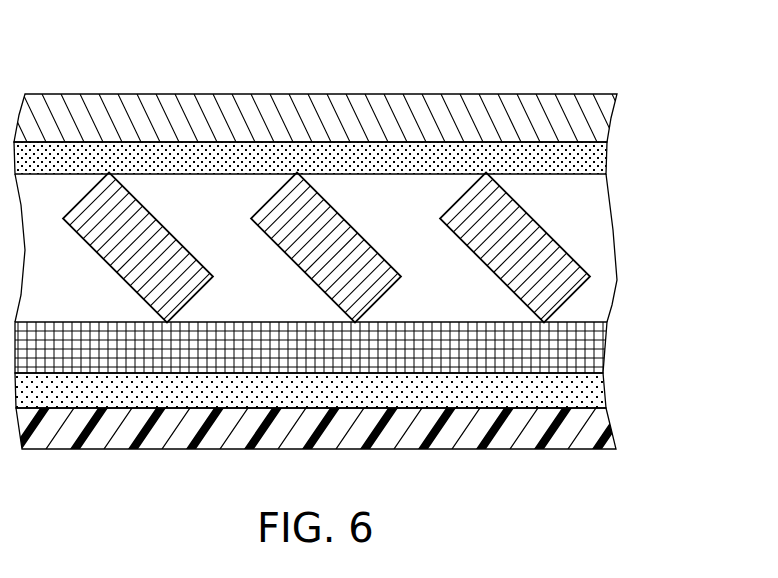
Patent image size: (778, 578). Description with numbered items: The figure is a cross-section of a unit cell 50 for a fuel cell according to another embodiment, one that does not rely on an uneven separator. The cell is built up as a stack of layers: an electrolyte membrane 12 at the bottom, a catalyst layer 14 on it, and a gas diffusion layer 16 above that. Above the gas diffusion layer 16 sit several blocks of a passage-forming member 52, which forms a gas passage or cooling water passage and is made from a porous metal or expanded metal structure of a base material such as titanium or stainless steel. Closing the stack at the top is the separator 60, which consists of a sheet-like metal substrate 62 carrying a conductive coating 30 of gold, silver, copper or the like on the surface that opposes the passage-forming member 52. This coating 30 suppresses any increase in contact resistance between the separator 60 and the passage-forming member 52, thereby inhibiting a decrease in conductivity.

The unit cell 50 is at (113, 63).
The separator 60 is at (697, 98).
The metal substrate 62 is at (600, 117).
The conductive coating 30 is at (597, 163).
The passage-forming member 52 is at (553, 237).
The gas diffusion layer 16 is at (605, 347).
The catalyst layer 14 is at (597, 388).
The electrolyte membrane 12 is at (607, 427).